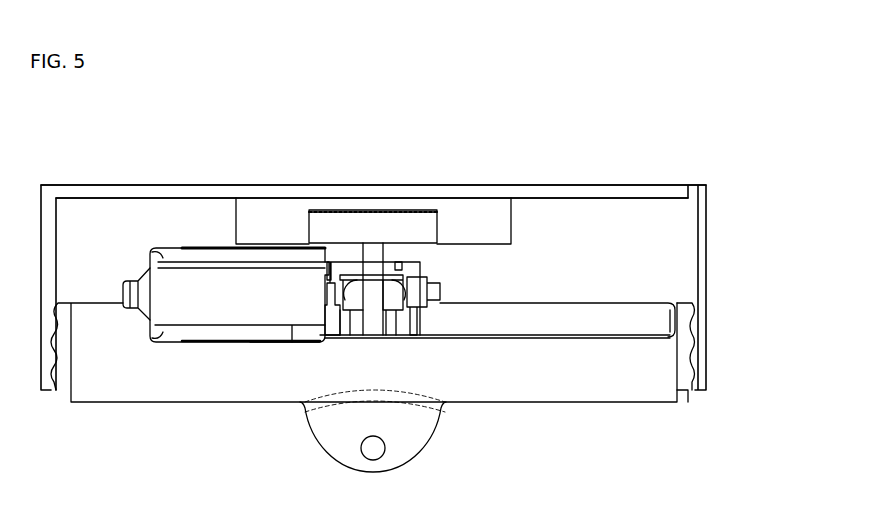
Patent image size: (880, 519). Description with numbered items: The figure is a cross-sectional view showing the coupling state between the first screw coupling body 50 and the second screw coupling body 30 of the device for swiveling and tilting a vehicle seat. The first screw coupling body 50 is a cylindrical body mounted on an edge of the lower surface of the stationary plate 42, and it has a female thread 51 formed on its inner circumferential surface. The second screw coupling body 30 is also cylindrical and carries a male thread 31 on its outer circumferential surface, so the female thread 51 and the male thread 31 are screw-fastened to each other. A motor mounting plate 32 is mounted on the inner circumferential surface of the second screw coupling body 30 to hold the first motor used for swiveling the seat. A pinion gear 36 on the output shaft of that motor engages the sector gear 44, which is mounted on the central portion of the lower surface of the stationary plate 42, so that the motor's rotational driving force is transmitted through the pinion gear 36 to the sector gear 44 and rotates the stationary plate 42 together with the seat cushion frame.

The second screw coupling body 30 is at (671, 410).
The male thread 31 is at (692, 362).
The motor mounting plate 32 is at (170, 325).
The pinion gear 36 is at (337, 220).
The stationary plate 42 is at (613, 190).
The sector gear 44 is at (436, 214).
The first screw coupling body 50 is at (714, 177).
The female thread 51 is at (690, 306).